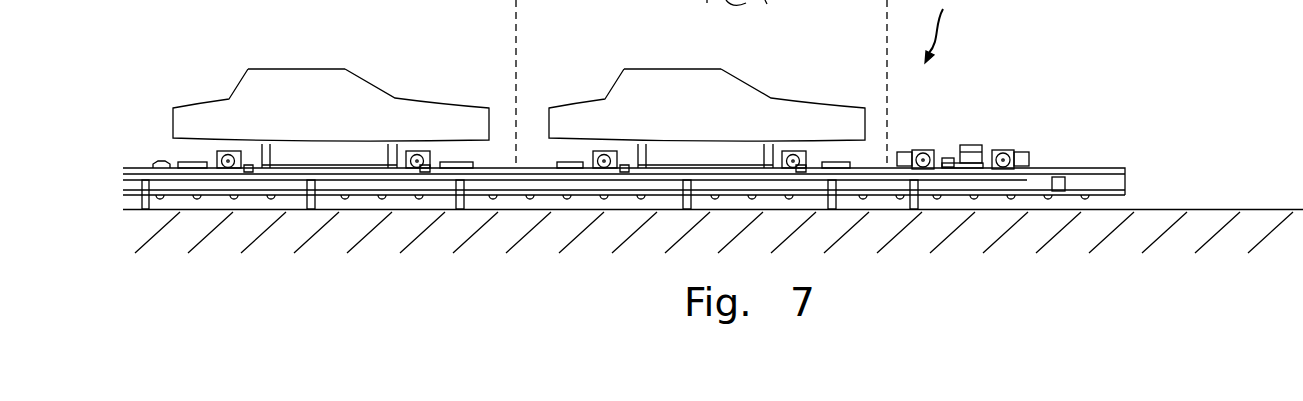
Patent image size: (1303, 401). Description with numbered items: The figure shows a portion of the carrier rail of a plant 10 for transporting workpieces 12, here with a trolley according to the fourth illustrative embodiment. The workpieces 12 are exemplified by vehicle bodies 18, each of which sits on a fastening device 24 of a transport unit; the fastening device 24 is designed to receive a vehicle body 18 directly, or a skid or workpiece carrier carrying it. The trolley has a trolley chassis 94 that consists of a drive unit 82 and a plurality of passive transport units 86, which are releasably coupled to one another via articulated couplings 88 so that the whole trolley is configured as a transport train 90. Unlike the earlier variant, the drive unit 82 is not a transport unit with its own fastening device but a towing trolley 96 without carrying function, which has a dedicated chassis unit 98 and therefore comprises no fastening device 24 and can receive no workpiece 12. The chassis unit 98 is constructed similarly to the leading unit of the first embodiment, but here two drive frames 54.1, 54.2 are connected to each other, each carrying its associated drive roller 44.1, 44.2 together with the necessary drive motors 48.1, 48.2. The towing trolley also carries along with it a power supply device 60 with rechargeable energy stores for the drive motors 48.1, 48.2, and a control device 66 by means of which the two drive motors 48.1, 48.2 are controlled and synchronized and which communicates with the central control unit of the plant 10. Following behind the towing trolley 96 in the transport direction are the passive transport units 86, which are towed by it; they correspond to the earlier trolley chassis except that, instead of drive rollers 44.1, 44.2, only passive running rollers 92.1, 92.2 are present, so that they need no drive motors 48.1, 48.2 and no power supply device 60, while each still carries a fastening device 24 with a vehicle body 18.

The plant 10 is at (1158, 90).
The workpiece 12 is at (283, 78).
The vehicle body 18 is at (308, 83).
The fastening device 24 is at (337, 160).
The drive roller 44.1 is at (1010, 172).
The drive roller 44.2 is at (926, 172).
The drive motor 48.1 is at (1027, 172).
The drive motor 48.2 is at (912, 172).
The drive frame 54.1 is at (1008, 150).
The drive frame 54.2 is at (920, 150).
The power supply device 60 is at (954, 157).
The control device 66 is at (980, 135).
The drive unit 82 is at (962, 180).
The passive transport unit 86 is at (283, 180).
The articulated coupling 88 is at (522, 160).
The transport train 90 is at (1110, 92).
The passive running roller 92.1 is at (415, 155).
The passive running roller 92.2 is at (228, 155).
The trolley chassis 94 is at (1074, 158).
The towing trolley 96 is at (933, 150).
The chassis unit 98 is at (993, 173).